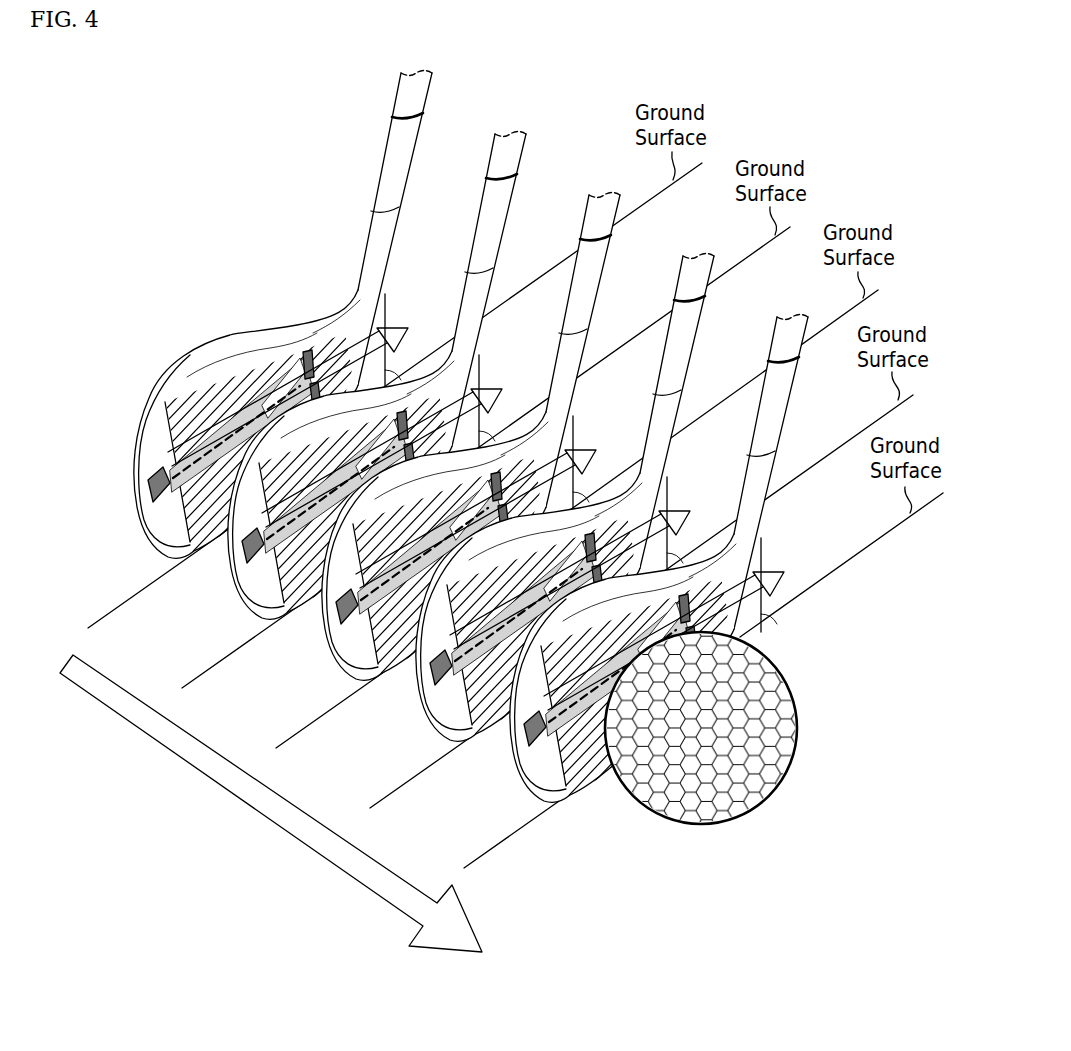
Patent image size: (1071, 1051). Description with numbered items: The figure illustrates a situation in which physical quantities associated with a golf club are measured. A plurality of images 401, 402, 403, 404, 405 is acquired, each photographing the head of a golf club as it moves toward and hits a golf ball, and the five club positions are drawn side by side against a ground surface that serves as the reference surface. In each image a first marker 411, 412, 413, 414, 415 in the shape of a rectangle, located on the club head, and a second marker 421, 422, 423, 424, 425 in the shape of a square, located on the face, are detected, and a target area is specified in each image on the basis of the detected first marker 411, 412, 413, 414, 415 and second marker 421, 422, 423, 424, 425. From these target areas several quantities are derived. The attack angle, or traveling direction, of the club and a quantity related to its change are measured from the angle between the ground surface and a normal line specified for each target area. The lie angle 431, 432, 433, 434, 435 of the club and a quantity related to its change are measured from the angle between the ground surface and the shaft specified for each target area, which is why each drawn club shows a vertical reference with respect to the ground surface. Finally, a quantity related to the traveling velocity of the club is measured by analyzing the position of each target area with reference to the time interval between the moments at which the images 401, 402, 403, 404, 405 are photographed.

The image 401 is at (365, 128).
The image 402 is at (460, 202).
The image 403 is at (564, 230).
The image 404 is at (662, 277).
The image 405 is at (755, 343).
The first marker 411 is at (313, 367).
The first marker 412 is at (407, 428).
The first marker 413 is at (501, 489).
The first marker 414 is at (595, 550).
The first marker 415 is at (753, 567).
The second marker 421 is at (155, 488).
The second marker 422 is at (244, 548).
The second marker 423 is at (337, 608).
The second marker 424 is at (431, 668).
The second marker 425 is at (525, 730).
The lie angle 431 is at (402, 366).
The lie angle 432 is at (490, 429).
The lie angle 433 is at (584, 490).
The lie angle 434 is at (678, 551).
The lie angle 435 is at (770, 607).